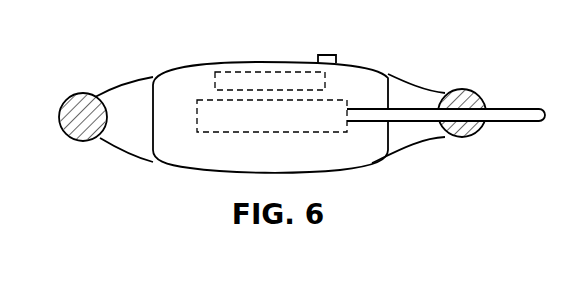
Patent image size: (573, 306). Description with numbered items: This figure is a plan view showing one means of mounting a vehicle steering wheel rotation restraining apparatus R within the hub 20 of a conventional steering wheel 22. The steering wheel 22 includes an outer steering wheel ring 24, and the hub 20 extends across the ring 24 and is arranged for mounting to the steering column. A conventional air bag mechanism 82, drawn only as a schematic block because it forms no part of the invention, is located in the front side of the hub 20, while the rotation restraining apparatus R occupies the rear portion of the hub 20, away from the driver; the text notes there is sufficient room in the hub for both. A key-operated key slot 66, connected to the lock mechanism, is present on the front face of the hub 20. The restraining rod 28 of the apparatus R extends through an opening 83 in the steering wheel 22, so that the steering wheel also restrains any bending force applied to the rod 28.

The hub 20 is at (372, 70).
The steering wheel 22 is at (441, 62).
The steering wheel ring 24 is at (455, 92).
The restraining rod 28 is at (522, 108).
The key slot 66 is at (332, 56).
The air bag mechanism 82 is at (232, 72).
The opening 83 is at (487, 108).
The rotation restraining apparatus R is at (327, 146).